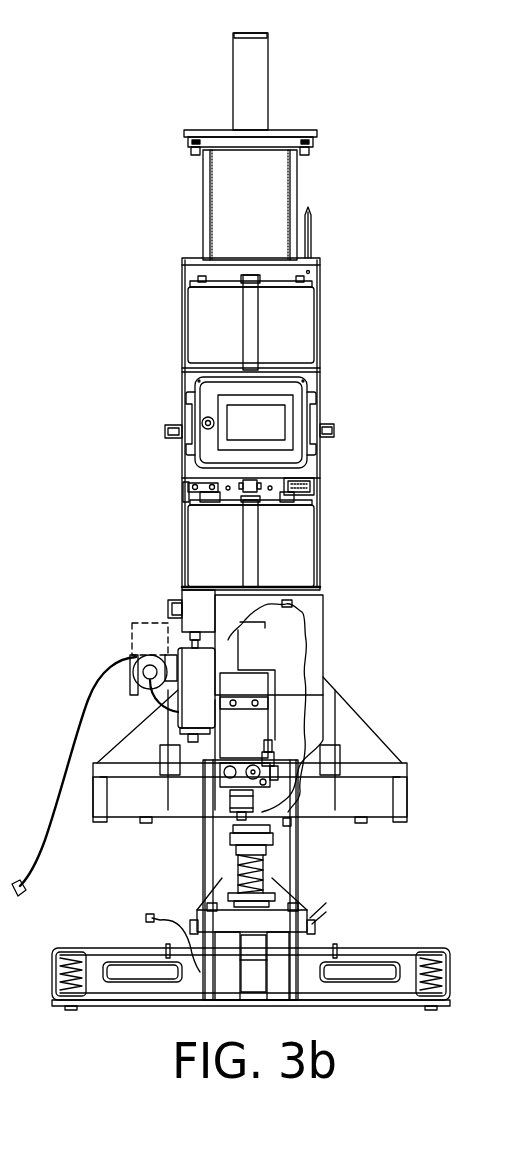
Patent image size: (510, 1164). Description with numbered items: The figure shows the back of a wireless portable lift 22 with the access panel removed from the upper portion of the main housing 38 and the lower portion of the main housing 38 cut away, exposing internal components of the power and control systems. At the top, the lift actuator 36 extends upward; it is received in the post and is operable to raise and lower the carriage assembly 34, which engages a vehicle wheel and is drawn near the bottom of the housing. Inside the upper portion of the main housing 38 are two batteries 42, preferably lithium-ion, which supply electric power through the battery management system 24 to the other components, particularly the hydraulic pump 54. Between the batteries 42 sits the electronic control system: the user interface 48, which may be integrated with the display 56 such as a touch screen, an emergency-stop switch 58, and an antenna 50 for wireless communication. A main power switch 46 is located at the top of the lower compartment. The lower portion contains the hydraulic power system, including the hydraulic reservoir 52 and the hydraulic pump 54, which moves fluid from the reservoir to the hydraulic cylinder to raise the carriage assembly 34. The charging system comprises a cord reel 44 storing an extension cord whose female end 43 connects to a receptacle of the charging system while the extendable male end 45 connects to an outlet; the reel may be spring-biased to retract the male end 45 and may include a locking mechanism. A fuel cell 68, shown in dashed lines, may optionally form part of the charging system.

The wireless portable lift 22 is at (103, 107).
The lift actuator 36 is at (243, 97).
The antenna 50 is at (311, 225).
The battery 42 is at (289, 328).
The user interface 48 is at (190, 384).
The battery management system 24 is at (291, 414).
The display 56 is at (272, 427).
The emergency-stop switch 58 is at (202, 423).
The main housing 38 is at (182, 550).
The main power switch 46 is at (168, 608).
The fuel cell 68 is at (130, 637).
The cord reel 44 is at (133, 670).
The female end 43 is at (176, 718).
The hydraulic reservoir 52 is at (275, 652).
The hydraulic pump 54 is at (236, 782).
The male end 45 is at (24, 892).
The carriage assembly 34 is at (367, 722).